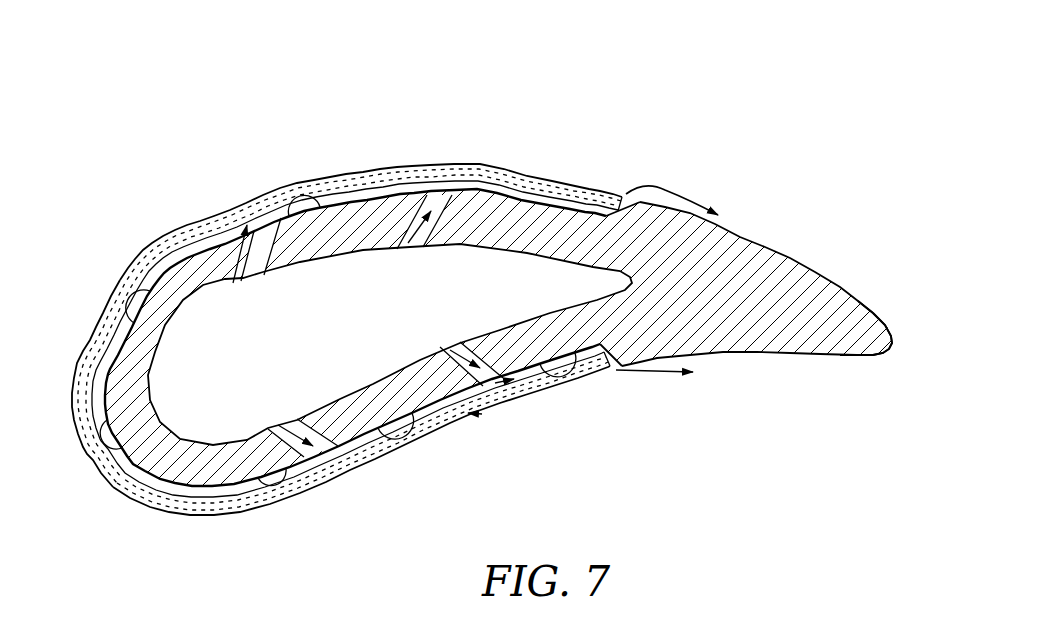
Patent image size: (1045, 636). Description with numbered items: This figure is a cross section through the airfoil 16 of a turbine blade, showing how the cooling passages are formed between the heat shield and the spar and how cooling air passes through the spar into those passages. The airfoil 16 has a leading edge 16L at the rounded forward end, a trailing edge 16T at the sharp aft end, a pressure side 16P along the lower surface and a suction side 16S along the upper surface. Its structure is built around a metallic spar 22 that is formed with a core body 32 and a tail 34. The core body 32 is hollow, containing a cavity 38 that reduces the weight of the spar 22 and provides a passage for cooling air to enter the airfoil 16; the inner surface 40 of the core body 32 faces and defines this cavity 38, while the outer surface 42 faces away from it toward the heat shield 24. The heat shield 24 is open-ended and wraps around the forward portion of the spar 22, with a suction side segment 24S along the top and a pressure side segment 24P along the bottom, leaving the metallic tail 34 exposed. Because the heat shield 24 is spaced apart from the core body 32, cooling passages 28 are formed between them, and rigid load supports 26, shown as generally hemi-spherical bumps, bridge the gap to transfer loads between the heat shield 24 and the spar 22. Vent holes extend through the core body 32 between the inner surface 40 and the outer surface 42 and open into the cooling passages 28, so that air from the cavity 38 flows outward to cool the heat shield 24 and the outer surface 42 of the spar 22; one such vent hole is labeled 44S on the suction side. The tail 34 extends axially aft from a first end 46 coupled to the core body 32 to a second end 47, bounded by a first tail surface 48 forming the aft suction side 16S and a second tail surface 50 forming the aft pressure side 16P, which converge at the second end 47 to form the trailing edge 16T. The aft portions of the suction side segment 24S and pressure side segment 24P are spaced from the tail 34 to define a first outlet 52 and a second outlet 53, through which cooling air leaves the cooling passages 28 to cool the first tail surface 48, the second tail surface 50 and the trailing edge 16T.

The airfoil 16 is at (130, 118).
The leading edge 16L is at (74, 430).
The suction side 16S is at (448, 163).
The pressure side 16P is at (448, 436).
The trailing edge 16T is at (903, 345).
The spar 22 is at (307, 494).
The heat shield 24 is at (153, 238).
The suction side segment 24S is at (403, 170).
The pressure side segment 24P is at (482, 420).
The rigid load supports 26 is at (113, 448).
The cooling passages 28 is at (517, 199).
The core body 32 is at (425, 385).
The tail 34 is at (785, 238).
The cavity 38 is at (307, 303).
The inner surface 40 is at (200, 324).
The outer surface 42 is at (200, 247).
The cooling channel 44S is at (530, 362).
The first end 46 is at (697, 152).
The second end 47 is at (863, 298).
The first tail surface 48 is at (728, 227).
The second tail surface 50 is at (747, 356).
The first outlet 52 is at (628, 192).
The second outlet 53 is at (620, 368).